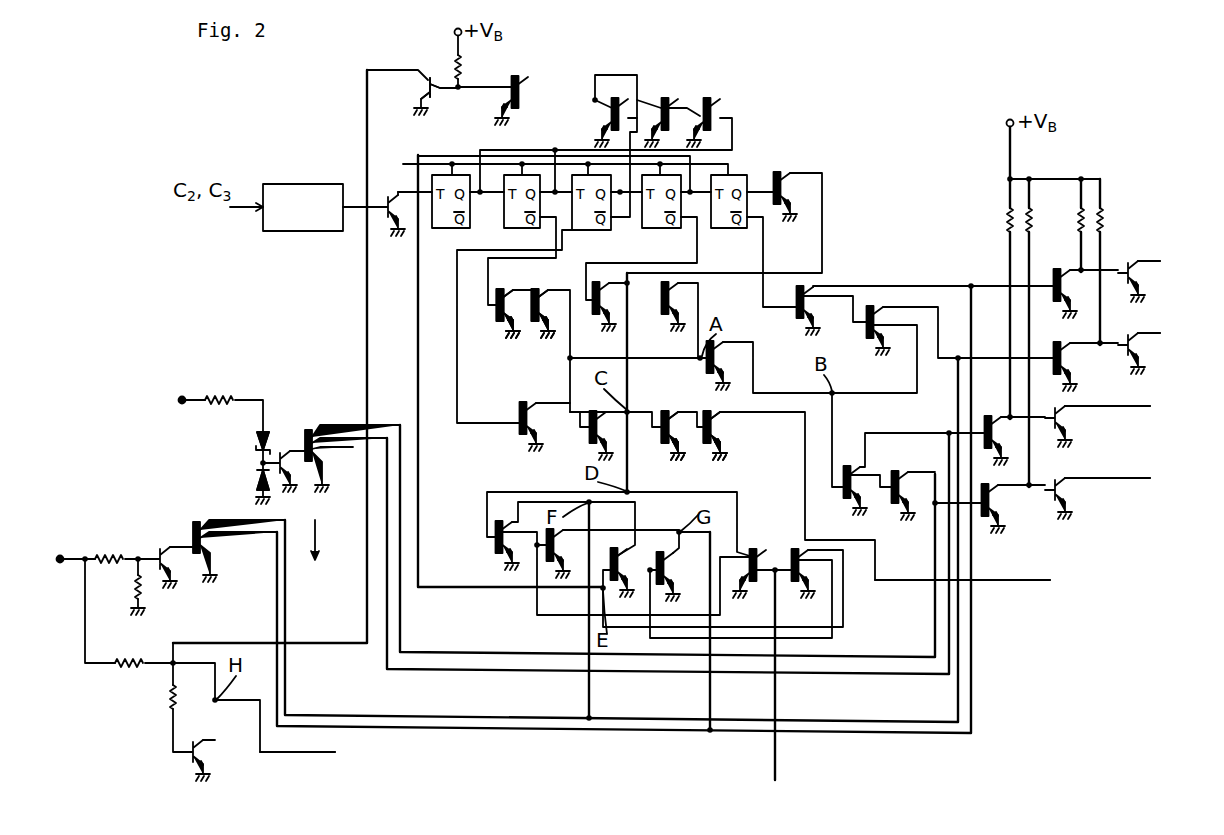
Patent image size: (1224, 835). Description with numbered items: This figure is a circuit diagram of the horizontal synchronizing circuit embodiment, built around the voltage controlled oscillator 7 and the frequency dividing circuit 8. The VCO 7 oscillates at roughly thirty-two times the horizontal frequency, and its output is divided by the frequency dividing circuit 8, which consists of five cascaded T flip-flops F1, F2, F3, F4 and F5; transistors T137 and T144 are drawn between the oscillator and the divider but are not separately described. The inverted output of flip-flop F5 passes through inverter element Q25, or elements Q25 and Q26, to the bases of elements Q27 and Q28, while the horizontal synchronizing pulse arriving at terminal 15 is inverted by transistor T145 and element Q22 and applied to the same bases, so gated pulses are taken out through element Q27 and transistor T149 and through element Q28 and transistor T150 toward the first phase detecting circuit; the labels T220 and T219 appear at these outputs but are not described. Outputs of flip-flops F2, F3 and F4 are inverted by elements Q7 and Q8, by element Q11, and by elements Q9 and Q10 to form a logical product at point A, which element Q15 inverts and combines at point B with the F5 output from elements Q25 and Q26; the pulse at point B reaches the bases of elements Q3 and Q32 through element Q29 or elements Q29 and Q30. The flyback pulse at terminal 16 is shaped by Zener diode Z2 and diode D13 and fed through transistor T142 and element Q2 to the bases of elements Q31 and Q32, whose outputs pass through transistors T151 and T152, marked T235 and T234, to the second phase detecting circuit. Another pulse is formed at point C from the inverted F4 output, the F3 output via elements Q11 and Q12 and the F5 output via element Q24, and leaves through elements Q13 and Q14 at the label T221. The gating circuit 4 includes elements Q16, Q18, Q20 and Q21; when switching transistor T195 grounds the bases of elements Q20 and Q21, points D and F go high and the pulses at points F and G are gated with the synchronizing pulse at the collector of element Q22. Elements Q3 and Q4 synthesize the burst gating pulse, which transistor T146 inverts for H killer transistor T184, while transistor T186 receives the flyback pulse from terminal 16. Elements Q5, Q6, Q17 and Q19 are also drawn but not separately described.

The VCO (voltage controlled oscillator) 7 is at (318, 184).
The frequency dividing circuit 8 is at (526, 301).
The gating circuit 4 is at (690, 452).
The terminal 15 is at (58, 565).
The terminal 16 is at (179, 405).
The T flip-flop F1 is at (448, 217).
The T flip-flop F2 is at (506, 214).
The T flip-flop F3 is at (584, 214).
The T flip-flop F4 is at (654, 218).
The T flip-flop F5 is at (725, 218).
The element Q2 is at (352, 458).
The element Q3 is at (501, 100).
The element Q4 is at (598, 122).
The transistor Q5 is at (662, 102).
The transistor Q6 is at (695, 122).
The element Q7 is at (494, 316).
The element Q8 is at (540, 318).
The element Q9 is at (592, 310).
The element Q10 is at (660, 310).
The element Q11 is at (515, 432).
The element Q12 is at (583, 439).
The element Q13 is at (659, 439).
The element Q14 is at (732, 435).
The element Q15 is at (707, 370).
The element Q16 is at (491, 554).
The transistor Q17 is at (573, 553).
The element Q18 is at (618, 552).
The transistor Q19 is at (691, 576).
The element Q20 is at (752, 583).
The element Q21 is at (799, 583).
The element Q22 is at (229, 535).
The element Q24 is at (784, 217).
The element Q25 is at (797, 319).
The element Q26 is at (867, 337).
The element Q27 is at (1056, 296).
The element Q28 is at (1056, 370).
The element Q29 is at (839, 497).
The element Q30 is at (890, 499).
The element Q31 is at (985, 428).
The element Q32 is at (1011, 509).
The transistor T137 is at (405, 90).
The transistor T142 is at (284, 451).
The transistor T144 is at (387, 222).
The transistor T145 is at (153, 551).
The transistor T146 is at (216, 760).
The transistor T149 is at (1120, 287).
The transistor T150 is at (1120, 359).
The transistor T151 is at (1081, 426).
The transistor T152 is at (1081, 498).
The transistor T184 is at (348, 754).
The transistor T186 is at (307, 557).
The switching transistor T195 is at (770, 752).
The output terminal T219 is at (1171, 334).
The output terminal T220 is at (1171, 262).
The output terminal T221 is at (984, 581).
The output terminal T234 is at (1132, 479).
The output terminal T235 is at (1132, 407).
The Zener diode Z2 is at (246, 443).
The diode D13 is at (241, 476).